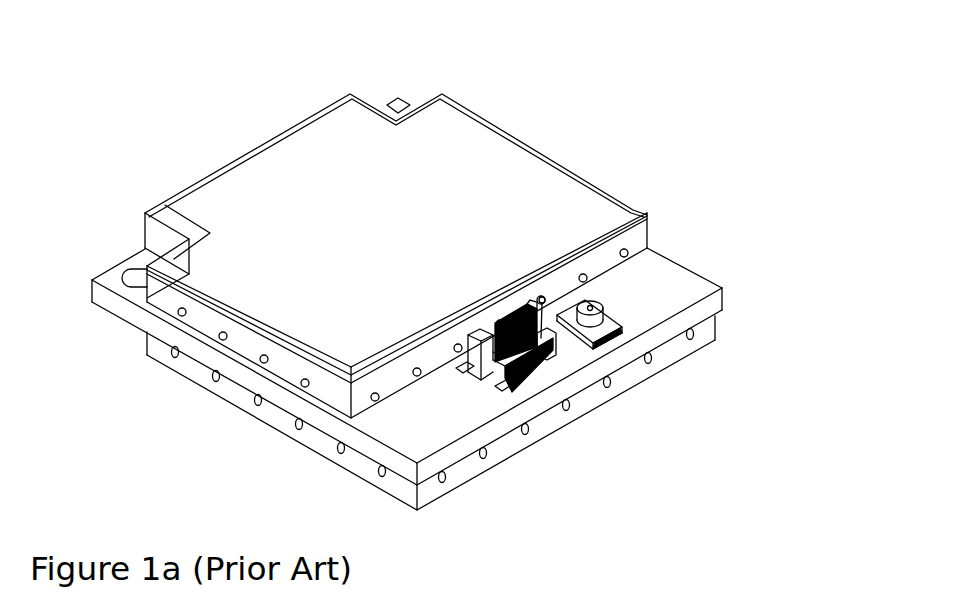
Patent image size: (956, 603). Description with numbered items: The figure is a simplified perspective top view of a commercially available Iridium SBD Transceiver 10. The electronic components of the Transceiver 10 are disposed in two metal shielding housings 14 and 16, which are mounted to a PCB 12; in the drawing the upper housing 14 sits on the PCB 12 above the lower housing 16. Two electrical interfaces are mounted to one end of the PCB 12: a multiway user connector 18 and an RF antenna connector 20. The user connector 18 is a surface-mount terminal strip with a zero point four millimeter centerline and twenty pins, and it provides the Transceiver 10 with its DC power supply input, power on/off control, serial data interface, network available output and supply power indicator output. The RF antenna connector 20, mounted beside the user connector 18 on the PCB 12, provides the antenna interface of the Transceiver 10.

The Iridium 9603/9603N SBD Transceiver 10 is at (590, 65).
The PCB 12 is at (436, 414).
The metal shielding housing 14 is at (273, 210).
The metal shielding housing 16 is at (220, 387).
The user connector 18 is at (555, 345).
The RF antenna connector 20 is at (613, 317).